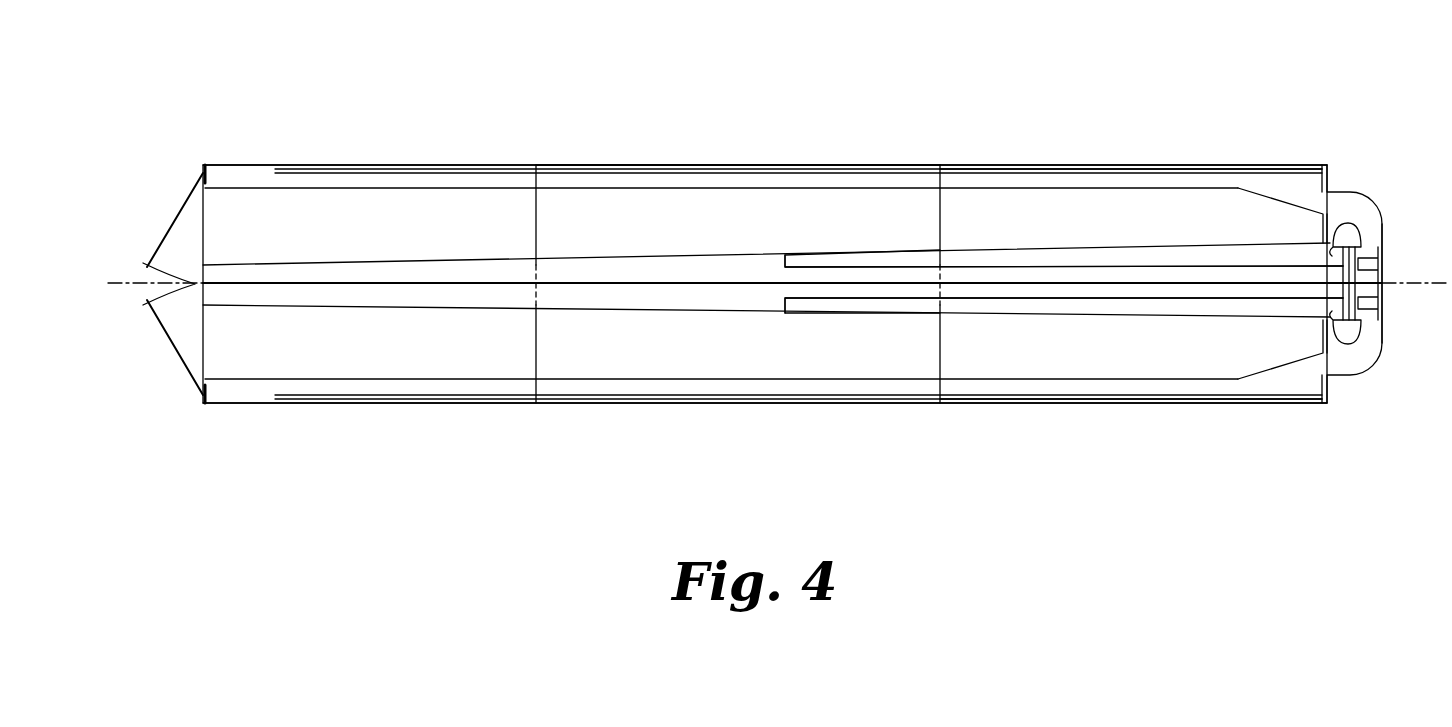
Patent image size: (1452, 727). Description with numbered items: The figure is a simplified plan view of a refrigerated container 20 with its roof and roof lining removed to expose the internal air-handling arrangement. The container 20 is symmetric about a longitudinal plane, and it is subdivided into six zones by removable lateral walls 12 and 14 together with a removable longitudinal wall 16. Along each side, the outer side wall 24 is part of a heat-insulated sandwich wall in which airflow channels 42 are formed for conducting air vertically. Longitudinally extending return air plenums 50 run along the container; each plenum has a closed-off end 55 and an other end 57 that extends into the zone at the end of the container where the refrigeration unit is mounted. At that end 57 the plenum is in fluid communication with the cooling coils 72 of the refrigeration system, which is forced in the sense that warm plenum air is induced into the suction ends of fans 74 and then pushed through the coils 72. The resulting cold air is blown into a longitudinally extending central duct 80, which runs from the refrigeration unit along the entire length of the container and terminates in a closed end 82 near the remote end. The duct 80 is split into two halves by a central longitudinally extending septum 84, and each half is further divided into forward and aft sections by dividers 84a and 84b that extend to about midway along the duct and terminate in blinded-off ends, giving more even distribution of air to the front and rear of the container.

The container 20 is at (730, 113).
The lateral removable wall 12 is at (538, 208).
The lateral removable wall 14 is at (942, 207).
The removable longitudinal wall 16 is at (288, 285).
The outer side wall 24 is at (390, 166).
The airflow channels 42 is at (900, 172).
The return air plenum 50 is at (777, 182).
The closed end of plenum 55 is at (200, 183).
The other end of plenum 57 is at (1287, 188).
The cooling coils 72 is at (1330, 247).
The fans 74 is at (1372, 262).
The central duct 80 is at (636, 258).
The closed end of duct 82 is at (202, 273).
The central septum 84 is at (745, 283).
The divider 84a is at (978, 252).
The divider 84b is at (978, 298).